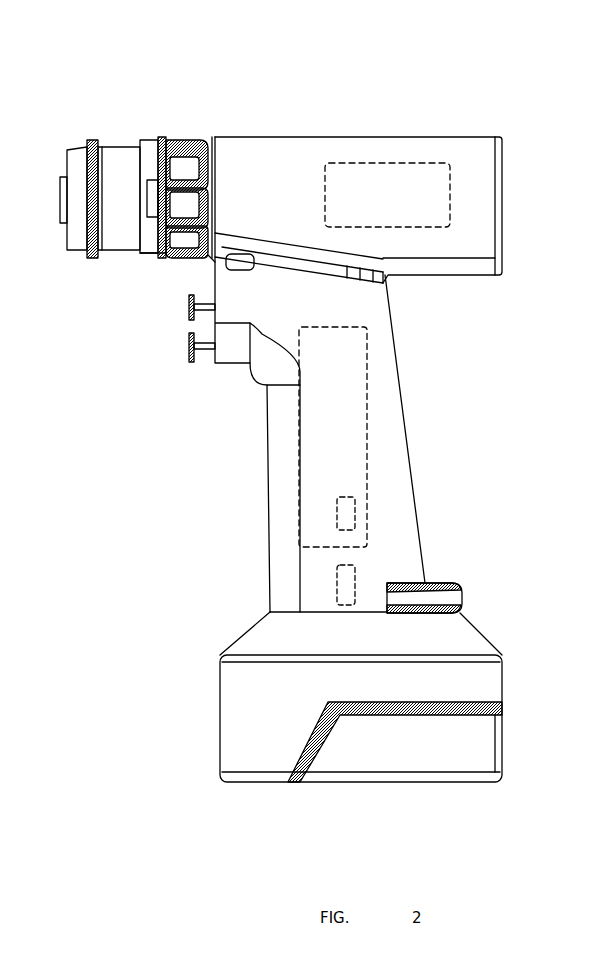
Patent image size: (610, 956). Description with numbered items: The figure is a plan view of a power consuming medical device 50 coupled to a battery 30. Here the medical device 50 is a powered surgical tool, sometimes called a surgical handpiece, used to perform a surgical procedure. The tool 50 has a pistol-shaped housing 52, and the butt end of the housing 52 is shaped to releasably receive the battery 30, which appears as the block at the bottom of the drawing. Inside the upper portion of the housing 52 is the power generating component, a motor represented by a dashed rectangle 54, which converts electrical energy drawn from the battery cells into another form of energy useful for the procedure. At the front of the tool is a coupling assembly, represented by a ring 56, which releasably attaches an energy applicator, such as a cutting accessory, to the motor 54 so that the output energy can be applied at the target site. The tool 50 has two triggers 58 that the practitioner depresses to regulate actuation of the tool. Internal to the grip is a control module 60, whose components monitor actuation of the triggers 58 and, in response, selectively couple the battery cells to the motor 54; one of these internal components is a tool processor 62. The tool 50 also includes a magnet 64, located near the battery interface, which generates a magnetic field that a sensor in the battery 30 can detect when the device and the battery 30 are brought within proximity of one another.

The battery 30 is at (361, 697).
The power consuming medical device 50 is at (448, 95).
The housing 52 is at (247, 137).
The motor 54 is at (435, 197).
The coupling assembly 56 is at (118, 137).
The triggers 58 is at (188, 347).
The control module 60 is at (352, 362).
The tool processor 62 is at (356, 511).
The magnet 64 is at (356, 583).